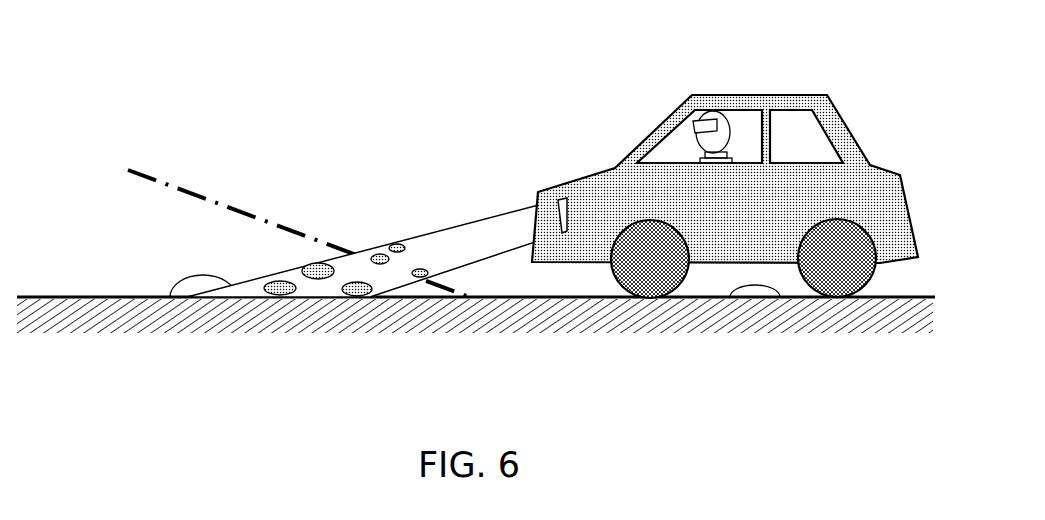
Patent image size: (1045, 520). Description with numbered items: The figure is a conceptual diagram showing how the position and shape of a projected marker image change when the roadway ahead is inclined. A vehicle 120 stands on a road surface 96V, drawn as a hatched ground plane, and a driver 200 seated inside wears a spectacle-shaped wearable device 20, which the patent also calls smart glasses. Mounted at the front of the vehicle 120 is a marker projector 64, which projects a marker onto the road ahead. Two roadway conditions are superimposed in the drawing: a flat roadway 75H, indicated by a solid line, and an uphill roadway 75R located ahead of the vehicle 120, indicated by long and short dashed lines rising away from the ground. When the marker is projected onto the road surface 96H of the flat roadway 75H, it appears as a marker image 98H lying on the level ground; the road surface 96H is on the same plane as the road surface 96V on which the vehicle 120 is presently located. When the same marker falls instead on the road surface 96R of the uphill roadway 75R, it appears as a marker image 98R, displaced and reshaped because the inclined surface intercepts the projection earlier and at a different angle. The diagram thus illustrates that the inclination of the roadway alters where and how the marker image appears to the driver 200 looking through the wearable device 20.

The wearable device 20 is at (707, 110).
The driver 200 is at (738, 133).
The vehicle 120 is at (814, 94).
The marker projector 64 is at (558, 191).
The uphill roadway 75R is at (198, 193).
The flat roadway 75H is at (90, 297).
The road surface 96R is at (312, 242).
The marker image 98R is at (402, 232).
The marker image 98H is at (268, 262).
The road surface 96H is at (185, 297).
The road surface 96V is at (735, 298).